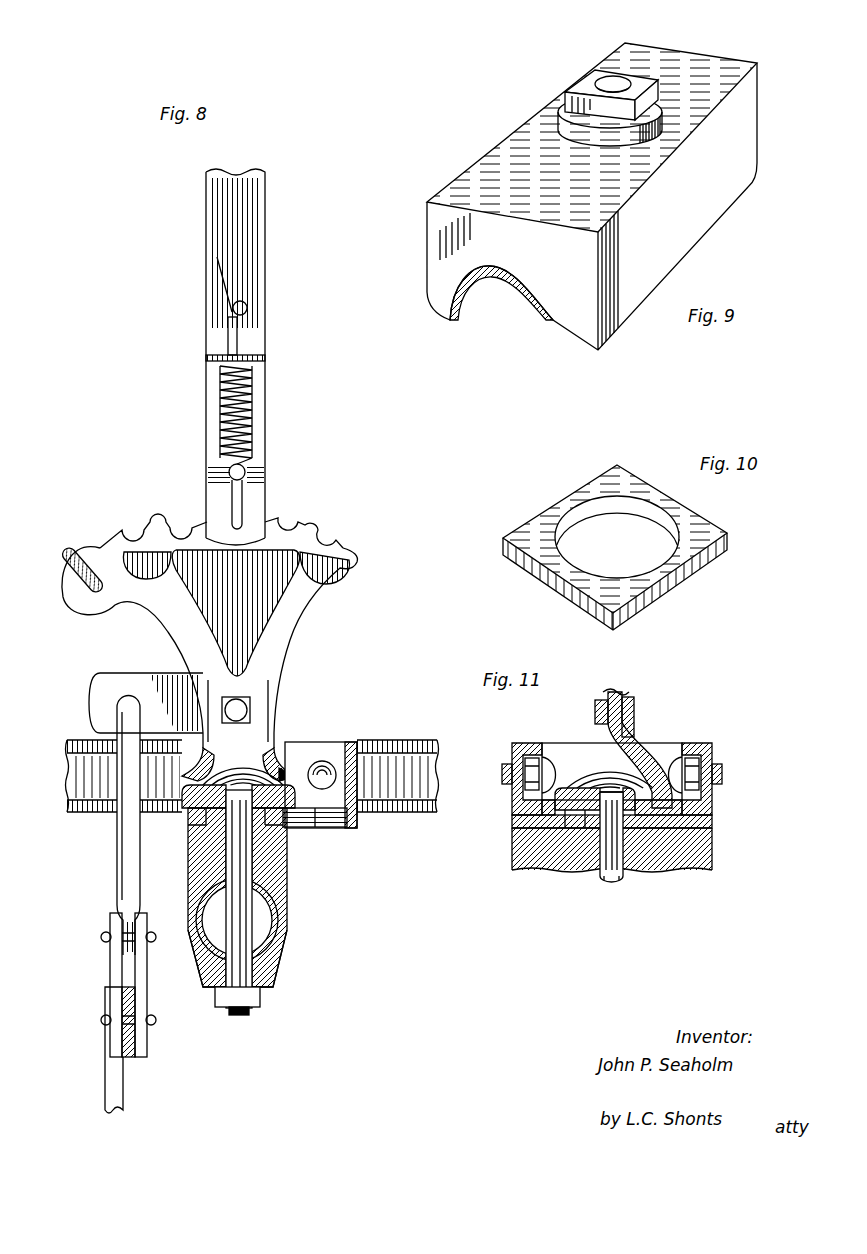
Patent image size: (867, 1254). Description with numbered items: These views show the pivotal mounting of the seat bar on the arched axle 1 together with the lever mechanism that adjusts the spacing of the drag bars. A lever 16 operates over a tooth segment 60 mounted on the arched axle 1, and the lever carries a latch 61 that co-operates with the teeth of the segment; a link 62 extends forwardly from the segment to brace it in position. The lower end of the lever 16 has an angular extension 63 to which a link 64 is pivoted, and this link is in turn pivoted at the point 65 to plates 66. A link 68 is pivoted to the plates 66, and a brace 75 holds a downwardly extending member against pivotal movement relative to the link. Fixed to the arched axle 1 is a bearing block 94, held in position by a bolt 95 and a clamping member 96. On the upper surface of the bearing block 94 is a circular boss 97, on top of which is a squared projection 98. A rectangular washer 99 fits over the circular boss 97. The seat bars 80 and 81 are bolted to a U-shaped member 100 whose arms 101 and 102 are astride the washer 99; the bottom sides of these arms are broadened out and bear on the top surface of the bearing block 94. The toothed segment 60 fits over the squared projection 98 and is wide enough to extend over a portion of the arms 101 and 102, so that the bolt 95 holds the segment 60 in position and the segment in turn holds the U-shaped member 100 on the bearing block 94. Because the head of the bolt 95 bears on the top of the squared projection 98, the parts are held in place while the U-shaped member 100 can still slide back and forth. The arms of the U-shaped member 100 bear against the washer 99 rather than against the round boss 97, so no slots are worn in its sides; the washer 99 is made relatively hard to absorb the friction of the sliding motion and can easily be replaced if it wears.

In FIG. 8, the arched axle 1 is at (275, 925).
In FIG. 8, the lever 16 is at (255, 293).
In FIG. 8, the tooth segment 60 is at (321, 577).
In FIG. 11, the tooth segment 60 is at (635, 735).
In FIG. 8, the latch 61 is at (230, 492).
In FIG. 8, the link 62 is at (82, 555).
In FIG. 8, the angular extension 63 is at (105, 688).
In FIG. 8, the link 64 is at (139, 853).
In FIG. 8, the pivot point 65 is at (143, 930).
In FIG. 8, the plates 66 is at (147, 968).
In FIG. 8, the link 68 is at (132, 1058).
In FIG. 8, the brace 75 is at (110, 1093).
In FIG. 8, the seat bar 80 is at (400, 747).
In FIG. 11, the seat bar 80 is at (517, 745).
In FIG. 11, the seat bar 81 is at (712, 749).
In FIG. 8, the bearing block 94 is at (272, 868).
In FIG. 9, the bearing block 94 is at (470, 185).
In FIG. 11, the bearing block 94 is at (520, 853).
In FIG. 8, the bolt 95 is at (230, 985).
In FIG. 11, the bolt 95 is at (608, 872).
In FIG. 8, the clamping member 96 is at (270, 975).
In FIG. 9, the circular boss 97 is at (556, 117).
In FIG. 11, the circular boss 97 is at (625, 872).
In FIG. 8, the squared projection 98 is at (194, 811).
In FIG. 9, the squared projection 98 is at (582, 86).
In FIG. 11, the squared projection 98 is at (628, 800).
In FIG. 8, the rectangular washer 99 is at (286, 824).
In FIG. 10, the rectangular washer 99 is at (626, 483).
In FIG. 11, the rectangular washer 99 is at (690, 846).
In FIG. 8, the U-shaped member 100 is at (320, 747).
In FIG. 11, the U-shaped member 100 is at (660, 748).
In FIG. 8, the arm 101 is at (326, 821).
In FIG. 11, the arm 101 is at (556, 828).
In FIG. 11, the arm 102 is at (700, 822).